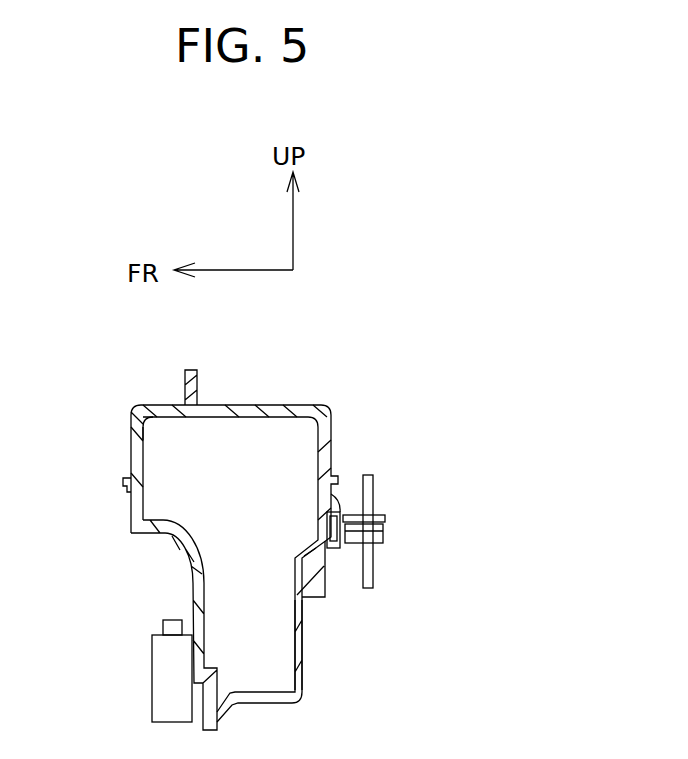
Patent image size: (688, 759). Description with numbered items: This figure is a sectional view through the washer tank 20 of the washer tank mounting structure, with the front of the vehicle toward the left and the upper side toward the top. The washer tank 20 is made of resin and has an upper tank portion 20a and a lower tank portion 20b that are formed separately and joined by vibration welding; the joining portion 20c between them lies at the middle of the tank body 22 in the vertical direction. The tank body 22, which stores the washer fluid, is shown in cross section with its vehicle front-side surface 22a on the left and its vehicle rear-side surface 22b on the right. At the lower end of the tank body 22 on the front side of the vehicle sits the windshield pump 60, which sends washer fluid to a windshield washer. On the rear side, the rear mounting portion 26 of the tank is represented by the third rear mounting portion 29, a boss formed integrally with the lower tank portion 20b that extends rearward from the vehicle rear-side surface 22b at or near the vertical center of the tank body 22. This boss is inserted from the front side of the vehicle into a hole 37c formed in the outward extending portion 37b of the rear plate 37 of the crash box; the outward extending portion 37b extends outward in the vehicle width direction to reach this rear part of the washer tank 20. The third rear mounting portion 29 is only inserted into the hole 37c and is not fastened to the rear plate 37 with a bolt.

The washer tank 20 is at (232, 532).
The upper tank portion 20a is at (157, 441).
The lower tank portion 20b is at (183, 557).
The joining portion 20c is at (133, 498).
The tank body 22 is at (187, 573).
The vehicle front-side surface 22a is at (192, 600).
The vehicle rear-side surface 22b is at (305, 652).
The rear plate 37 is at (411, 511).
The outward extending portion 37b is at (374, 489).
The hole 37c is at (385, 530).
The third rear mounting portion 29 is at (420, 550).
The rear mounting portion 26 is at (383, 540).
The windshield pump 60 is at (167, 697).